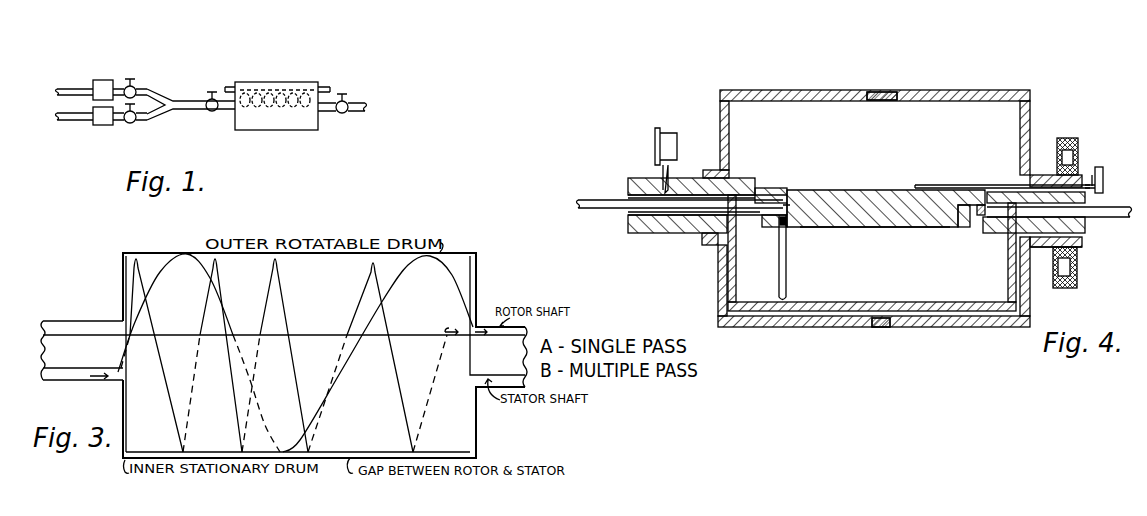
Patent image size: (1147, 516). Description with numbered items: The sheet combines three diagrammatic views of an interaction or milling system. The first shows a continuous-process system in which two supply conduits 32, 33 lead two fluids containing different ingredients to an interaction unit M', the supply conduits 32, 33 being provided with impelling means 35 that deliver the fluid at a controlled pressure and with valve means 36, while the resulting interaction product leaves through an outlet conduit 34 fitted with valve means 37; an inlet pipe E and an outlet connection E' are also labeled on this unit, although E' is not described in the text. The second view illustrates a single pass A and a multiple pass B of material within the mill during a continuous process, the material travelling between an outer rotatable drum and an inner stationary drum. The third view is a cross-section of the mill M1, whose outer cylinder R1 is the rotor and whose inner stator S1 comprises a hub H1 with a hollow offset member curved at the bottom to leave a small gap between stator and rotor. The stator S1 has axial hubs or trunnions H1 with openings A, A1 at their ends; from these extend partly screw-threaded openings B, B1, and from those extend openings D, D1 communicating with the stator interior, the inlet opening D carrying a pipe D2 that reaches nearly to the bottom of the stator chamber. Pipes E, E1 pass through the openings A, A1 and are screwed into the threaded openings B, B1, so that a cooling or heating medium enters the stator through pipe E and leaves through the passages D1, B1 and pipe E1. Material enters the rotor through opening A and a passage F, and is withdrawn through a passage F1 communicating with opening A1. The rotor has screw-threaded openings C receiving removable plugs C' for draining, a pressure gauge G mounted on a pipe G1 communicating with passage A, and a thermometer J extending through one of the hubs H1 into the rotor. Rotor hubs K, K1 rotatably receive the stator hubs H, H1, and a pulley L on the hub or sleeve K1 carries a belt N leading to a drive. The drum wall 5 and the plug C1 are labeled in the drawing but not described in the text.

In FIG. 1, the supply conduit 32 is at (119, 89).
In FIG. 1, the supply conduit 33 is at (122, 121).
In FIG. 1, the outlet conduit 34 is at (325, 112).
In FIG. 1, the impelling means 35 is at (101, 81).
In FIG. 1, the valve means 36 is at (137, 90).
In FIG. 1, the valve means 37 is at (347, 112).
In FIG. 1, the pipe E is at (228, 76).
In FIG. 4, the pipe E is at (680, 216).
In FIG. 1, the outlet connection E' is at (336, 80).
In FIG. 1, the interaction unit M' is at (276, 119).
In FIG. 3, the opening A is at (157, 280).
In FIG. 4, the opening A is at (627, 214).
In FIG. 3, the opening B is at (167, 358).
In FIG. 4, the opening B is at (790, 203).
In FIG. 4, the drum wall 5 is at (828, 108).
In FIG. 4, the screw-threaded opening C is at (870, 336).
In FIG. 4, the removable plug C' is at (891, 84).
In FIG. 4, the plug C1 is at (877, 92).
In FIG. 4, the outer cylinder R1 is at (982, 92).
In FIG. 4, the mill M1 is at (781, 338).
In FIG. 4, the pressure gauge G is at (655, 152).
In FIG. 4, the pipe G1 is at (669, 174).
In FIG. 4, the hub H1 is at (668, 233).
In FIG. 4, the hub K is at (708, 245).
In FIG. 4, the passage F is at (762, 190).
In FIG. 4, the inner stator S1 is at (862, 186).
In FIG. 4, the hub H is at (875, 227).
In FIG. 4, the opening D is at (773, 227).
In FIG. 4, the pipe D2 is at (787, 274).
In FIG. 4, the opening D1 is at (960, 227).
In FIG. 4, the opening B1 is at (980, 216).
In FIG. 4, the passage F1 is at (990, 192).
In FIG. 4, the opening A1 is at (1085, 228).
In FIG. 4, the pipe E1 is at (1112, 217).
In FIG. 4, the belt N is at (1056, 139).
In FIG. 4, the pulley L is at (1077, 270).
In FIG. 4, the hub or sleeve K1 is at (1038, 246).
In FIG. 4, the thermometer J is at (1088, 187).